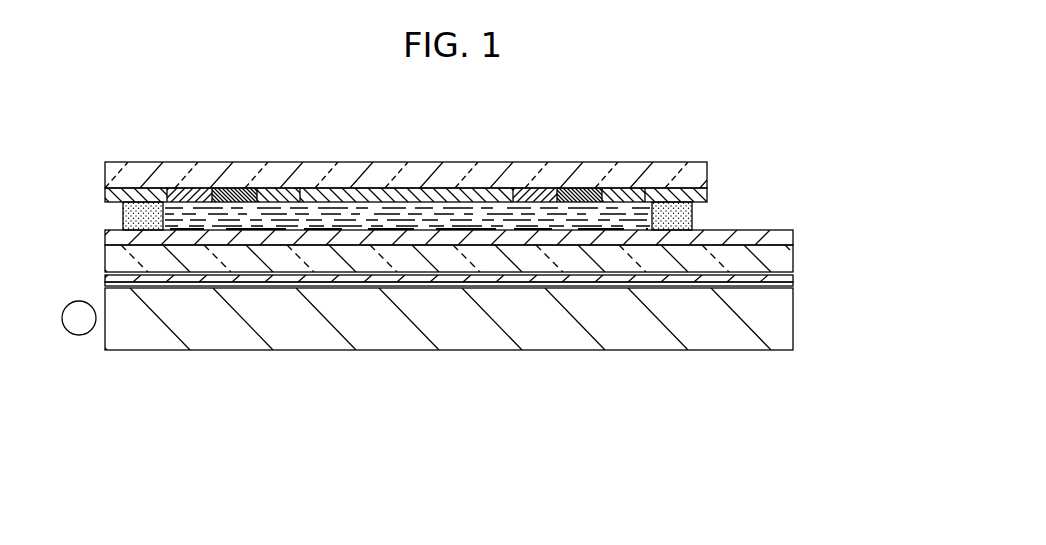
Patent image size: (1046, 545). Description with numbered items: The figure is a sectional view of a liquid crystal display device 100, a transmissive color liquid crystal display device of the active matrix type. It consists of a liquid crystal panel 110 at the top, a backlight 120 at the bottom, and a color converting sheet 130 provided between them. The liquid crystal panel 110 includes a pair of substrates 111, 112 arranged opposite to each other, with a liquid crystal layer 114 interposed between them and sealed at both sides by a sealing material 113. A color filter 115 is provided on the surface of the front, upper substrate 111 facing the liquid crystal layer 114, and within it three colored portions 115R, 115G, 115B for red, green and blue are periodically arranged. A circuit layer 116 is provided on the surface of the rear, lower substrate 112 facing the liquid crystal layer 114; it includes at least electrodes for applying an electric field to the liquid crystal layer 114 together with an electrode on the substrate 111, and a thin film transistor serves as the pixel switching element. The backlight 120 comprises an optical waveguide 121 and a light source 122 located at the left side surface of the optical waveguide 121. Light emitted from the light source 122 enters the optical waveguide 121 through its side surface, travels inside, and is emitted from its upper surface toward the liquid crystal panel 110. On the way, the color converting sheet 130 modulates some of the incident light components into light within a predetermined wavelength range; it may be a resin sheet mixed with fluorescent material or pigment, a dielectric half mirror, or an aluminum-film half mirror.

The liquid crystal display device 100 is at (820, 150).
The liquid crystal panel 110 is at (808, 272).
The substrate 111 is at (110, 178).
The substrate 112 is at (110, 259).
The sealing material 113 is at (122, 216).
The liquid crystal layer 114 is at (477, 217).
The color filter 115 is at (707, 196).
The colored portion 115R is at (197, 190).
The colored portion 115G is at (252, 188).
The colored portion 115B is at (273, 192).
The circuit layer 116 is at (758, 241).
The backlight 120 is at (808, 288).
The optical waveguide 121 is at (141, 337).
The light source 122 is at (79, 335).
The color converting sheet 130 is at (792, 280).